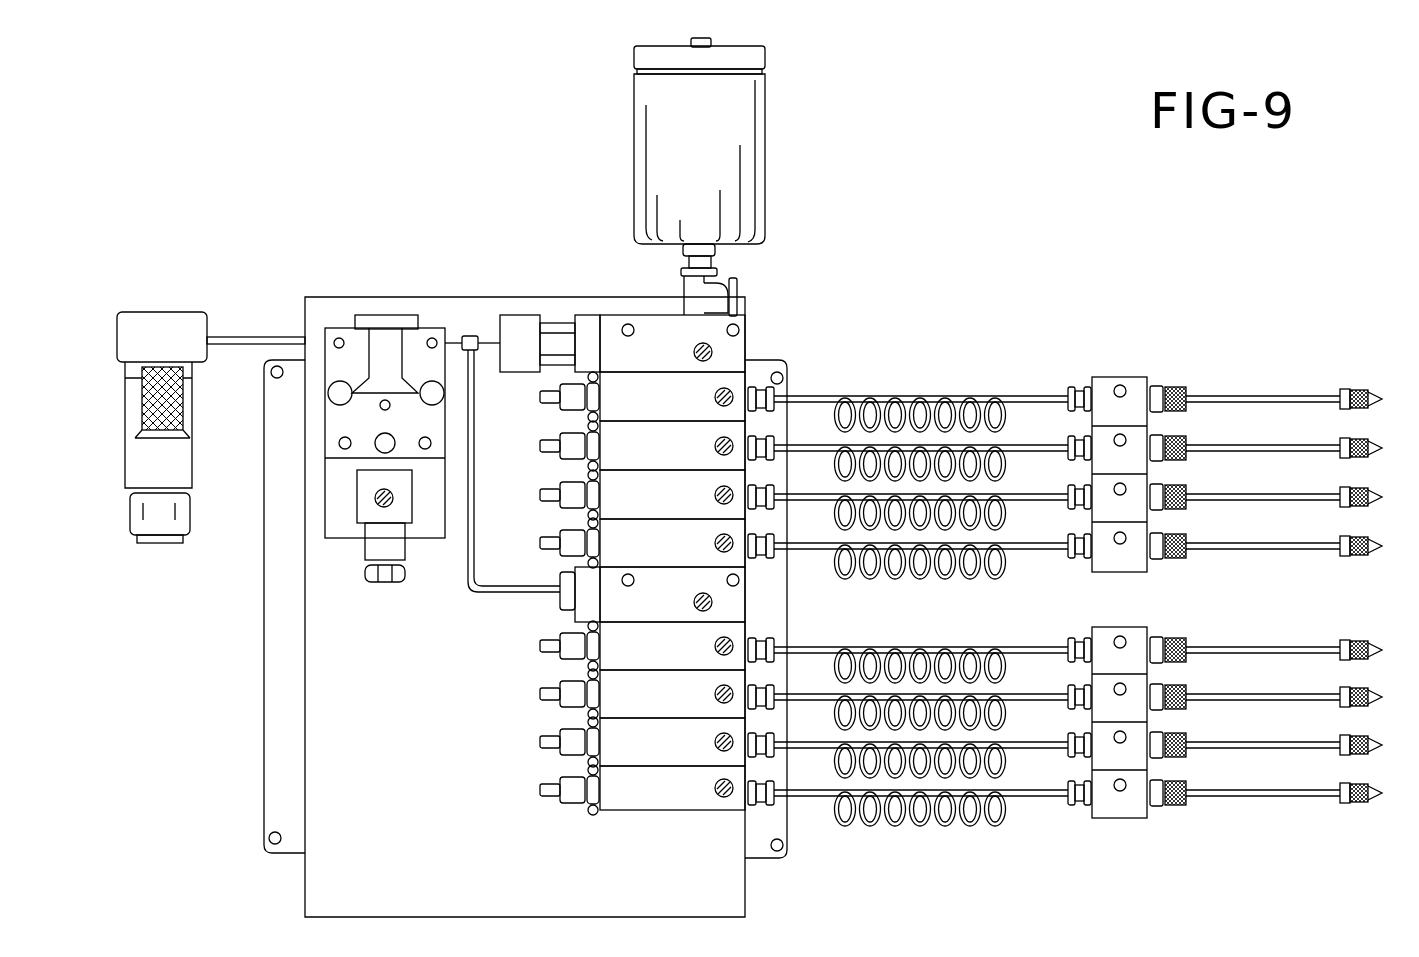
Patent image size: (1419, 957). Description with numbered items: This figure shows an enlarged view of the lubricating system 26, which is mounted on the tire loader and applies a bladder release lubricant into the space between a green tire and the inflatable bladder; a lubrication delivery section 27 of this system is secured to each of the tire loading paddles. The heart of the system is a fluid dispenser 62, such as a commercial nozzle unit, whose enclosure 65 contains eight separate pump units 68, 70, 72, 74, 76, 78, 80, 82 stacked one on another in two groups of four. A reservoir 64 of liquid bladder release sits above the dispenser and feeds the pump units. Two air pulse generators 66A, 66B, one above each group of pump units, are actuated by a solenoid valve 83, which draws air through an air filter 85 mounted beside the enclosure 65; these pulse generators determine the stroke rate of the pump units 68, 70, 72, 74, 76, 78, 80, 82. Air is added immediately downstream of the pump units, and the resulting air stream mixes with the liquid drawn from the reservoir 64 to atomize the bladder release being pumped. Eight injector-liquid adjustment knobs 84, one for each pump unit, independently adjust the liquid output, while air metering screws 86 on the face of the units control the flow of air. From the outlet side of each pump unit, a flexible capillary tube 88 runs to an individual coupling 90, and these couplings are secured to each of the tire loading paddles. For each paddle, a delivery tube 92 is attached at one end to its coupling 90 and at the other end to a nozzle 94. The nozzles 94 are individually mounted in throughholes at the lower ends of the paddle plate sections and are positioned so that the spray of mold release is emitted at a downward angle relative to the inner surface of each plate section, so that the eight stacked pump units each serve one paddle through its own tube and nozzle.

The lubricating system 26 is at (1028, 284).
The lubrication delivery section 27 is at (1115, 595).
The fluid dispenser 62 is at (689, 574).
The reservoir 64 is at (698, 118).
The enclosure 65 is at (326, 720).
The air pulse generator 66A is at (700, 332).
The air pulse generator 66B is at (722, 604).
The pump unit 68 is at (688, 412).
The pump unit 70 is at (688, 461).
The pump unit 72 is at (688, 510).
The pump unit 74 is at (688, 558).
The pump unit 76 is at (688, 661).
The pump unit 78 is at (688, 709).
The pump unit 80 is at (688, 757).
The pump unit 82 is at (688, 805).
The solenoid valve 83 is at (386, 345).
The injector-liquid adjustment knobs 84 is at (578, 540).
The air filter 85 is at (163, 345).
The air metering screws 86 is at (736, 450).
The flexible capillary tubes 88 is at (1060, 445).
The couplings 90 is at (1127, 385).
The delivery tube 92 is at (1270, 452).
The nozzle 94 is at (1380, 445).